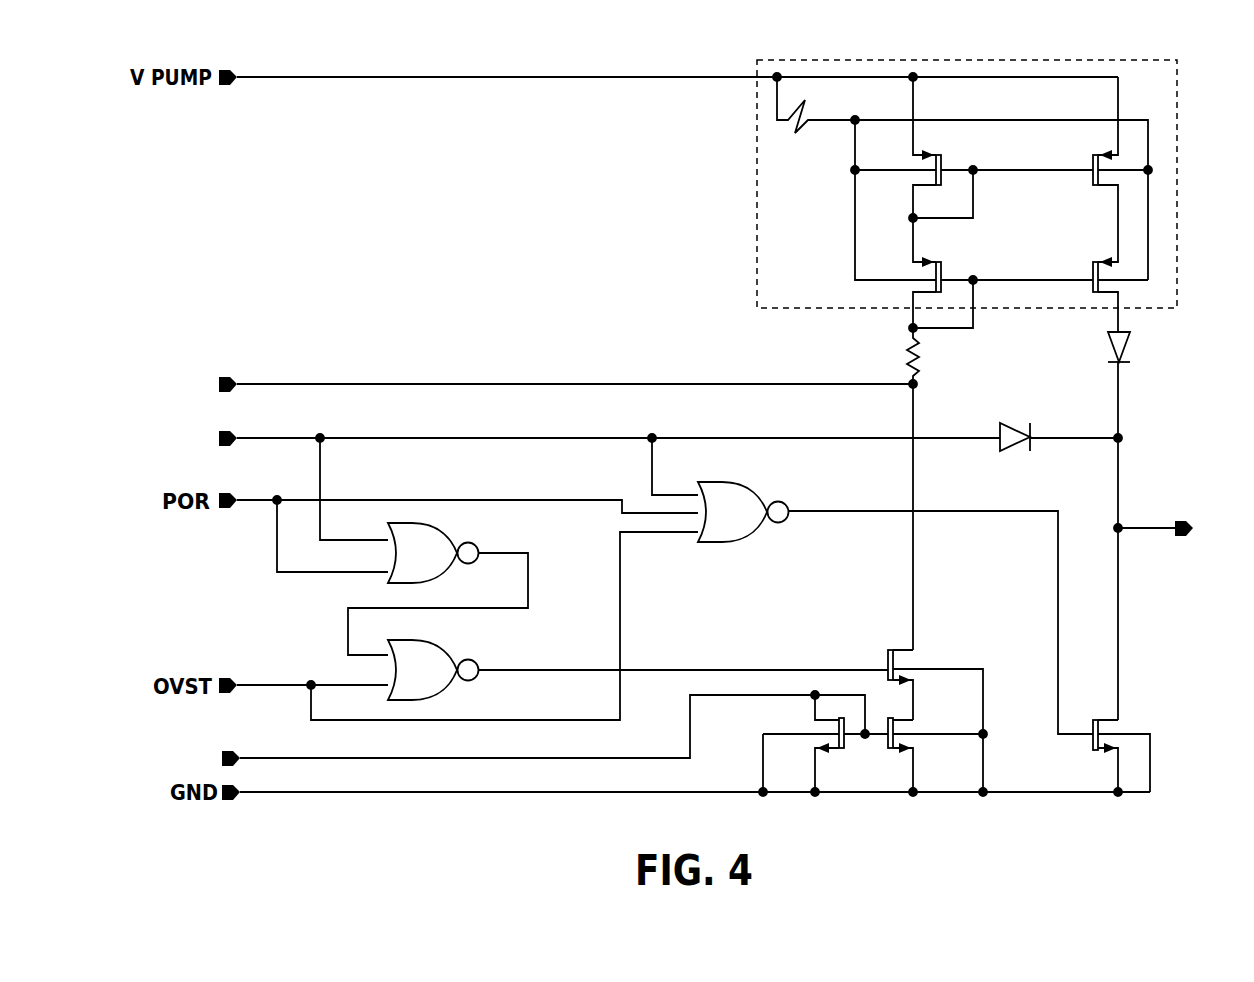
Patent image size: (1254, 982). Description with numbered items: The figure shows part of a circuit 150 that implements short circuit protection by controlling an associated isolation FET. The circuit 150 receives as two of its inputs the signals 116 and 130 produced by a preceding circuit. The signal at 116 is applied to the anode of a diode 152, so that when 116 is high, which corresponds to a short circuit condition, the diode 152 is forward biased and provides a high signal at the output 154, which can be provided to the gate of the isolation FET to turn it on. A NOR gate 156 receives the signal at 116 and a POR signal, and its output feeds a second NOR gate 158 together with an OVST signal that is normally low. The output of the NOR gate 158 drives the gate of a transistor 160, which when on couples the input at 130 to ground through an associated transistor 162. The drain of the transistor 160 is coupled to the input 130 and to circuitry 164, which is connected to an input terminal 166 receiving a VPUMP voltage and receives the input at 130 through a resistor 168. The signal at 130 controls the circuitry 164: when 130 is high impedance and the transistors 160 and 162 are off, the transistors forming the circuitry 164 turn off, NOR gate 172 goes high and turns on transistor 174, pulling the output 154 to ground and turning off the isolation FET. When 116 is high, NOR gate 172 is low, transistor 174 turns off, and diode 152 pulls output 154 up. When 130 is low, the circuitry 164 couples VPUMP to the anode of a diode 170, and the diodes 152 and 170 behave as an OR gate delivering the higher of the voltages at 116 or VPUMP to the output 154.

The output signal 116 is at (237, 432).
The output signal 130 is at (237, 378).
The circuit 150 is at (996, 804).
The diode 152 is at (1010, 424).
The output 154 is at (1195, 522).
The NOR gate 156 is at (441, 527).
The NOR gate 158 is at (441, 644).
The transistor 160 is at (882, 655).
The transistor 162 is at (917, 724).
The circuitry 164 is at (750, 253).
The input terminal 166 is at (237, 70).
The resistor 168 is at (908, 361).
The diode 170 is at (1125, 346).
The NOR gate 172 is at (745, 490).
The transistor 174 is at (1086, 750).